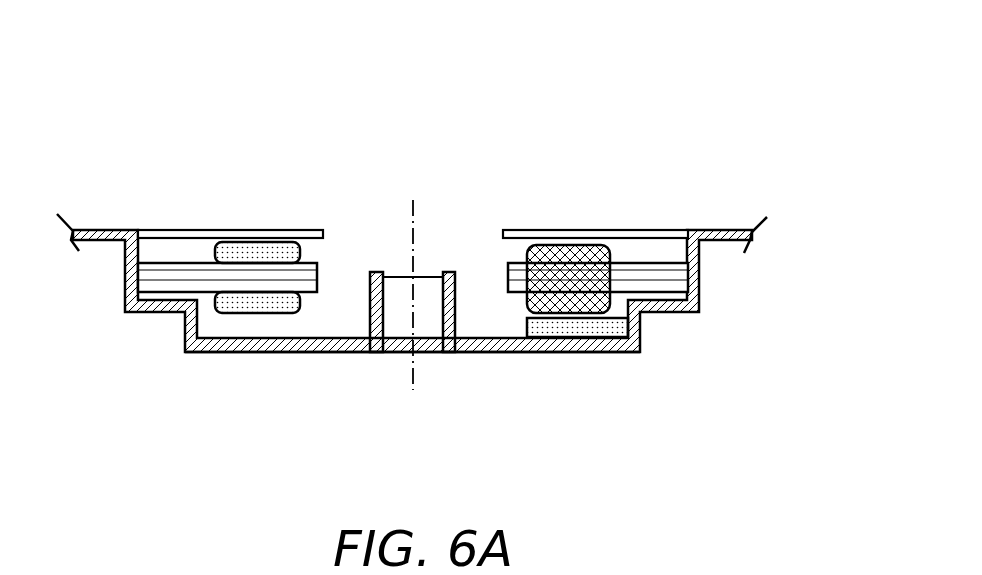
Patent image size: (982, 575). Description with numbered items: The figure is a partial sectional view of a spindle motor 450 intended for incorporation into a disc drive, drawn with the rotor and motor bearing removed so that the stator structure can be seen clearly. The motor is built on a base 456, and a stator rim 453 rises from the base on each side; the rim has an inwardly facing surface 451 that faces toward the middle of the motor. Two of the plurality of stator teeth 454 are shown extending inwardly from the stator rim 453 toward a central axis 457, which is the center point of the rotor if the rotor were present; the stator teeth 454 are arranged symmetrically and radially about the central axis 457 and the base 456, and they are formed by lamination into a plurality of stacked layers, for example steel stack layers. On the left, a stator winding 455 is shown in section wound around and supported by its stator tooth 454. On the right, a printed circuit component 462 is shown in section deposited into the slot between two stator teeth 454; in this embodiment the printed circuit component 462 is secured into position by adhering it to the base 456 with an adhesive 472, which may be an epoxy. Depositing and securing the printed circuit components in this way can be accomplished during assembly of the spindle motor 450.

The spindle motor 450 is at (548, 126).
The inwardly facing surface 451 is at (683, 250).
The stator rim 453 is at (695, 270).
The stator teeth 454 is at (647, 278).
The stator winding 455 is at (252, 244).
The base 456 is at (278, 352).
The central axis 457 is at (413, 373).
The printed circuit component 462 is at (586, 245).
The adhesive 472 is at (576, 325).